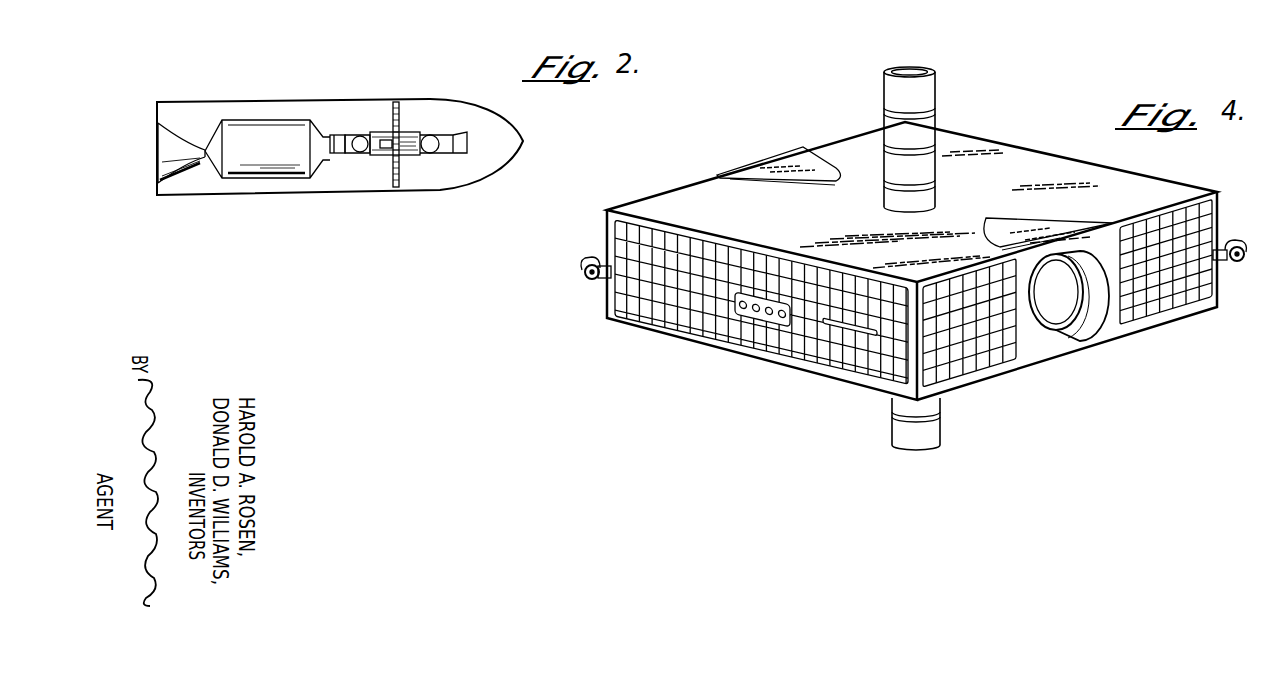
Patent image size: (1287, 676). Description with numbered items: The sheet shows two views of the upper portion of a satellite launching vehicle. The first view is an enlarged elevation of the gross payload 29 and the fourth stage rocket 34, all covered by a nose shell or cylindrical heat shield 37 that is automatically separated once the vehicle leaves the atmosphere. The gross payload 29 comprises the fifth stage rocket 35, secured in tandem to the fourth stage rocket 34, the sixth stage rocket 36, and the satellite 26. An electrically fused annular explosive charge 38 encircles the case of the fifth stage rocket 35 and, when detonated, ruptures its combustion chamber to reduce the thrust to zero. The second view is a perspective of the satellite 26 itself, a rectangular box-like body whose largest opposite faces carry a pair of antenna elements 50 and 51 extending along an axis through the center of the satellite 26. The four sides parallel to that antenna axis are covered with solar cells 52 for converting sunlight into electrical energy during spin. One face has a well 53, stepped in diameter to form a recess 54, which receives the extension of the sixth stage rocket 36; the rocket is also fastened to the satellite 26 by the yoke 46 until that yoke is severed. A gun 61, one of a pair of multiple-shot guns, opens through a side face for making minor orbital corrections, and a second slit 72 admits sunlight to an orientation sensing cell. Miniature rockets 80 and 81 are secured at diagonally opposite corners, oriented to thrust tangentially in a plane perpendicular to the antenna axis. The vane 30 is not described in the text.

In FIG. 2, the satellite 26 is at (386, 132).
In FIG. 4, the satellite 26 is at (1023, 148).
In FIG. 2, the gross payload 29 is at (468, 96).
In FIG. 4, the antenna vane 30 is at (778, 163).
In FIG. 2, the fourth stage rocket 34 is at (258, 120).
In FIG. 2, the fifth stage rocket 35 is at (353, 135).
In FIG. 2, the sixth stage rocket 36 is at (449, 153).
In FIG. 2, the heat shield 37 is at (287, 100).
In FIG. 2, the annular explosive charge 38 is at (345, 153).
In FIG. 4, the yoke 46 is at (1005, 224).
In FIG. 4, the antenna element 50 is at (933, 82).
In FIG. 4, the antenna element 51 is at (940, 425).
In FIG. 4, the solar cells 52 is at (637, 317).
In FIG. 4, the well 53 is at (1036, 284).
In FIG. 4, the recess 54 is at (1089, 300).
In FIG. 4, the gun 61 is at (758, 311).
In FIG. 4, the second slit 72 is at (839, 330).
In FIG. 4, the miniature rocket 80 is at (585, 280).
In FIG. 4, the miniature rocket 81 is at (1245, 258).